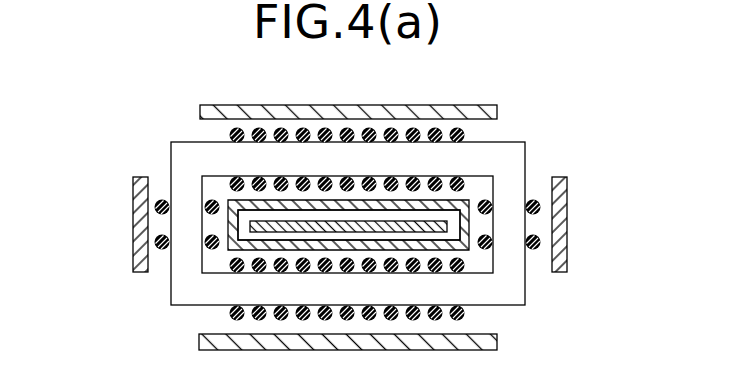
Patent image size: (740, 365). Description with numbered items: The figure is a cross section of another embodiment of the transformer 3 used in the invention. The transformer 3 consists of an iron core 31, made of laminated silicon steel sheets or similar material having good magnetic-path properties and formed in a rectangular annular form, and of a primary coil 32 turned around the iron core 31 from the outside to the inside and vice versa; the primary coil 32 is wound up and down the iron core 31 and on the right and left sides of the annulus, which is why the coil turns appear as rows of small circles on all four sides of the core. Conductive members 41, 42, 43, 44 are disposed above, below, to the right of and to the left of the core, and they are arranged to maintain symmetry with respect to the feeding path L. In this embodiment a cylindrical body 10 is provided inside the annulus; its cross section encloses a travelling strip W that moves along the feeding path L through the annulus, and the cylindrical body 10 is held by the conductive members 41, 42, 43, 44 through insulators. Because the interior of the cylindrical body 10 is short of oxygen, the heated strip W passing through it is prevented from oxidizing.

The transformer 3 is at (175, 133).
The iron core 31 is at (171, 152).
The primary coil 32 is at (237, 128).
The cylindrical body 10 is at (242, 200).
The travelling strip W is at (448, 226).
The feeding path L is at (436, 234).
The conductive member 41 is at (498, 112).
The conductive member 42 is at (198, 343).
The conductive member 43 is at (568, 202).
The conductive member 44 is at (132, 212).